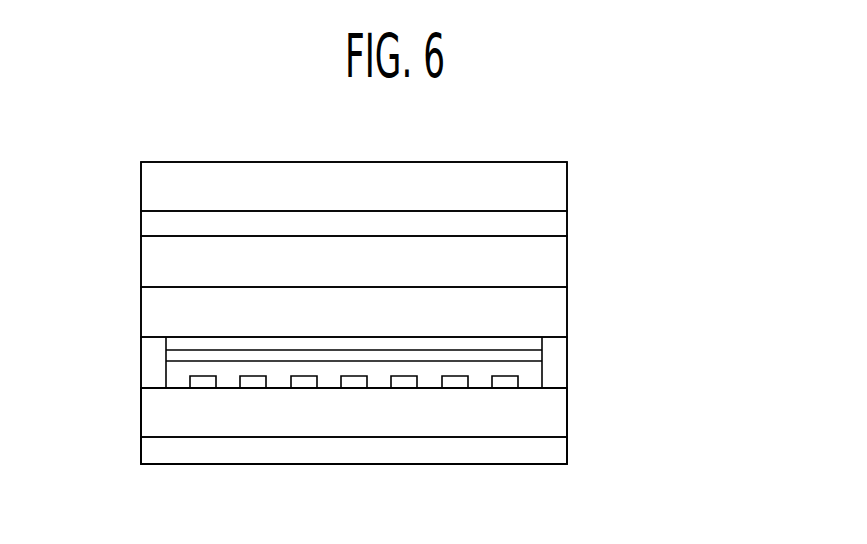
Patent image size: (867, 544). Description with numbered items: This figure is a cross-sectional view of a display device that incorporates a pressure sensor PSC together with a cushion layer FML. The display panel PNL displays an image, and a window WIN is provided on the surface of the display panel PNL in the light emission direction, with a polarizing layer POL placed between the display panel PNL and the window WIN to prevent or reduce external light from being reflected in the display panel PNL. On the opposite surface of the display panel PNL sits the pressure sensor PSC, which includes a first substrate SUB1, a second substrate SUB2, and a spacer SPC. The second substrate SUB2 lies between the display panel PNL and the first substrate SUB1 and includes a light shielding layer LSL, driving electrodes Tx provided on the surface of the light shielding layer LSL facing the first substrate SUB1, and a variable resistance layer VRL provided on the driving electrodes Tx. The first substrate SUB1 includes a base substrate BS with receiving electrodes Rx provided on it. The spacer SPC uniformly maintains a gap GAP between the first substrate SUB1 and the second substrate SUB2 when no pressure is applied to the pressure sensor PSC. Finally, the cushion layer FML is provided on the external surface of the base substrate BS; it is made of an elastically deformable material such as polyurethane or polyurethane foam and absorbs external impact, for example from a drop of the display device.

The window WIN is at (557, 186).
The polarizing layer POL is at (557, 227).
The display panel PNL is at (557, 261).
The light shielding layer LSL is at (553, 318).
The driving electrodes Tx is at (533, 344).
The variable resistance layer VRL is at (533, 355).
The gap GAP is at (187, 373).
The spacer SPC is at (553, 379).
The second substrate SUB2 is at (391, 368).
The receiving electrodes Rx is at (510, 382).
The base substrate BS is at (552, 428).
The first substrate SUB1 is at (426, 430).
The cushion layer FML is at (543, 453).
The pressure sensor PSC is at (722, 337).